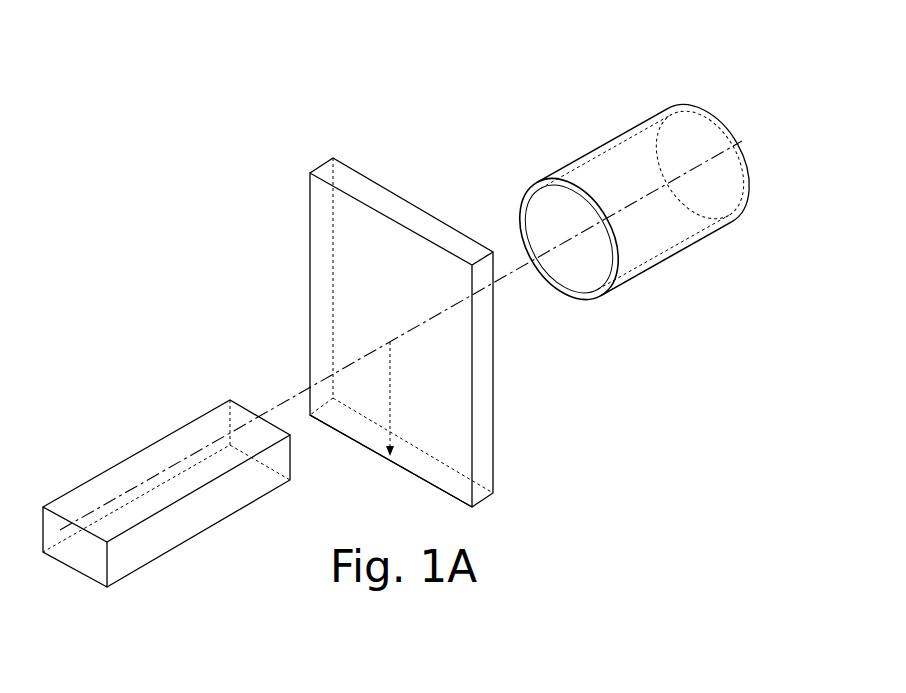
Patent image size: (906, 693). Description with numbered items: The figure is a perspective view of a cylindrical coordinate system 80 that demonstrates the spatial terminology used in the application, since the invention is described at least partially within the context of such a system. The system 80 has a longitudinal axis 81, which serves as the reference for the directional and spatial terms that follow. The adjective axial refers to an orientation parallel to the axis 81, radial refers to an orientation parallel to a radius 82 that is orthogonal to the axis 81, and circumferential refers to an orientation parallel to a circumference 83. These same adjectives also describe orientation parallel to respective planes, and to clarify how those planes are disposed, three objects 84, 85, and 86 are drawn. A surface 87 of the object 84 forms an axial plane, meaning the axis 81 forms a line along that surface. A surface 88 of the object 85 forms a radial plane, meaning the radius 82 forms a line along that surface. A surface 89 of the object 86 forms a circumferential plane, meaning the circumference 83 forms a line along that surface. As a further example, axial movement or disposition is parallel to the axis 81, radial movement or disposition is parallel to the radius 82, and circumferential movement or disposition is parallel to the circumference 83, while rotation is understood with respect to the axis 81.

The cylindrical coordinate system 80 is at (265, 208).
The longitudinal axis 81 is at (597, 203).
The radius 82 is at (390, 392).
The circumference 83 is at (520, 203).
The object 84 is at (166, 522).
The object 85 is at (505, 493).
The object 86 is at (657, 270).
The surface 87 is at (128, 477).
The surface 88 is at (403, 353).
The surface 89 is at (597, 143).